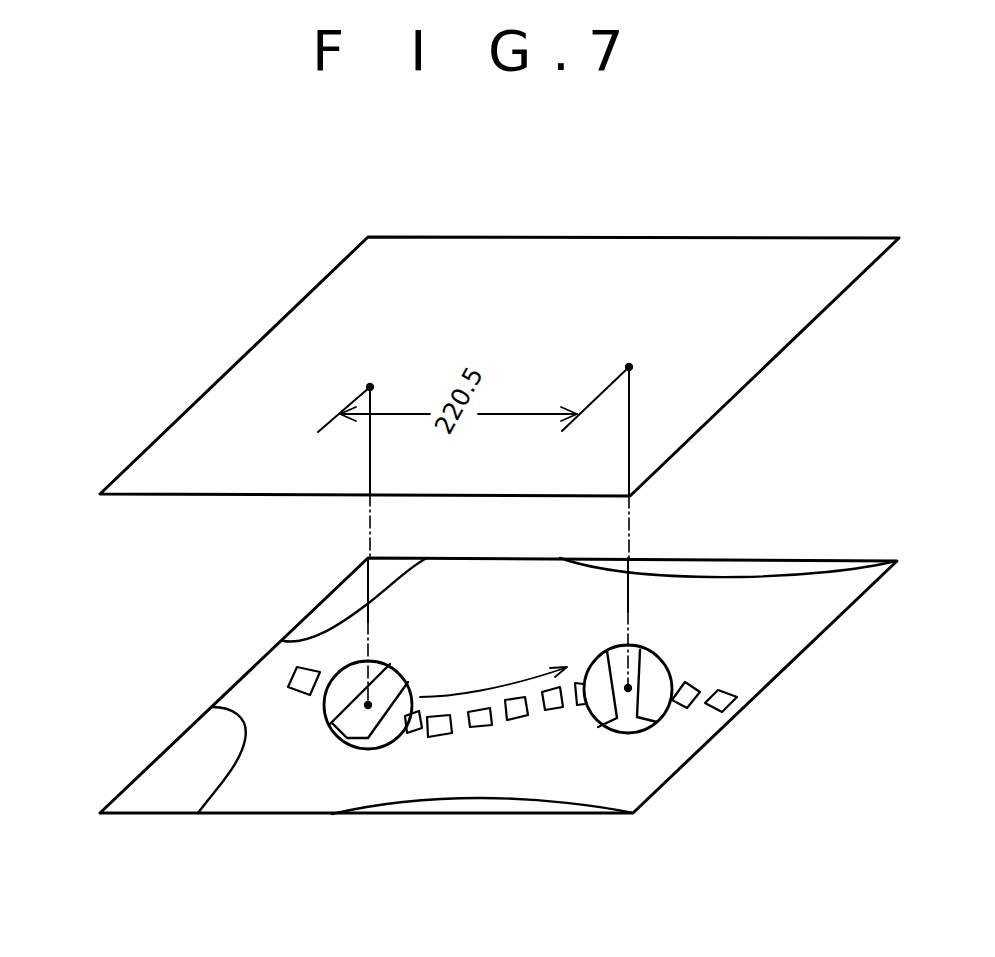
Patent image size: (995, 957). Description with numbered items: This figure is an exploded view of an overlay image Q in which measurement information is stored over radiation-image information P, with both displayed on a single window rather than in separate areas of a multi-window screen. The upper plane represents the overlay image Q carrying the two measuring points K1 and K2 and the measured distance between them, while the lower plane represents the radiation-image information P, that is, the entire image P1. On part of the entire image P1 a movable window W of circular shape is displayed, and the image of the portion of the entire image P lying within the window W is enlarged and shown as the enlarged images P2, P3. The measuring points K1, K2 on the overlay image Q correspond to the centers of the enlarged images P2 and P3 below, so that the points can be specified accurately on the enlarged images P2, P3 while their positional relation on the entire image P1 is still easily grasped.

The overlay image Q is at (250, 310).
The radiation-image information P is at (115, 778).
The measuring point K1 is at (363, 516).
The measuring point K2 is at (612, 501).
The movable window W is at (344, 663).
The entire image P1 is at (235, 802).
The enlarged image P2 is at (345, 738).
The enlarged image P3 is at (657, 672).